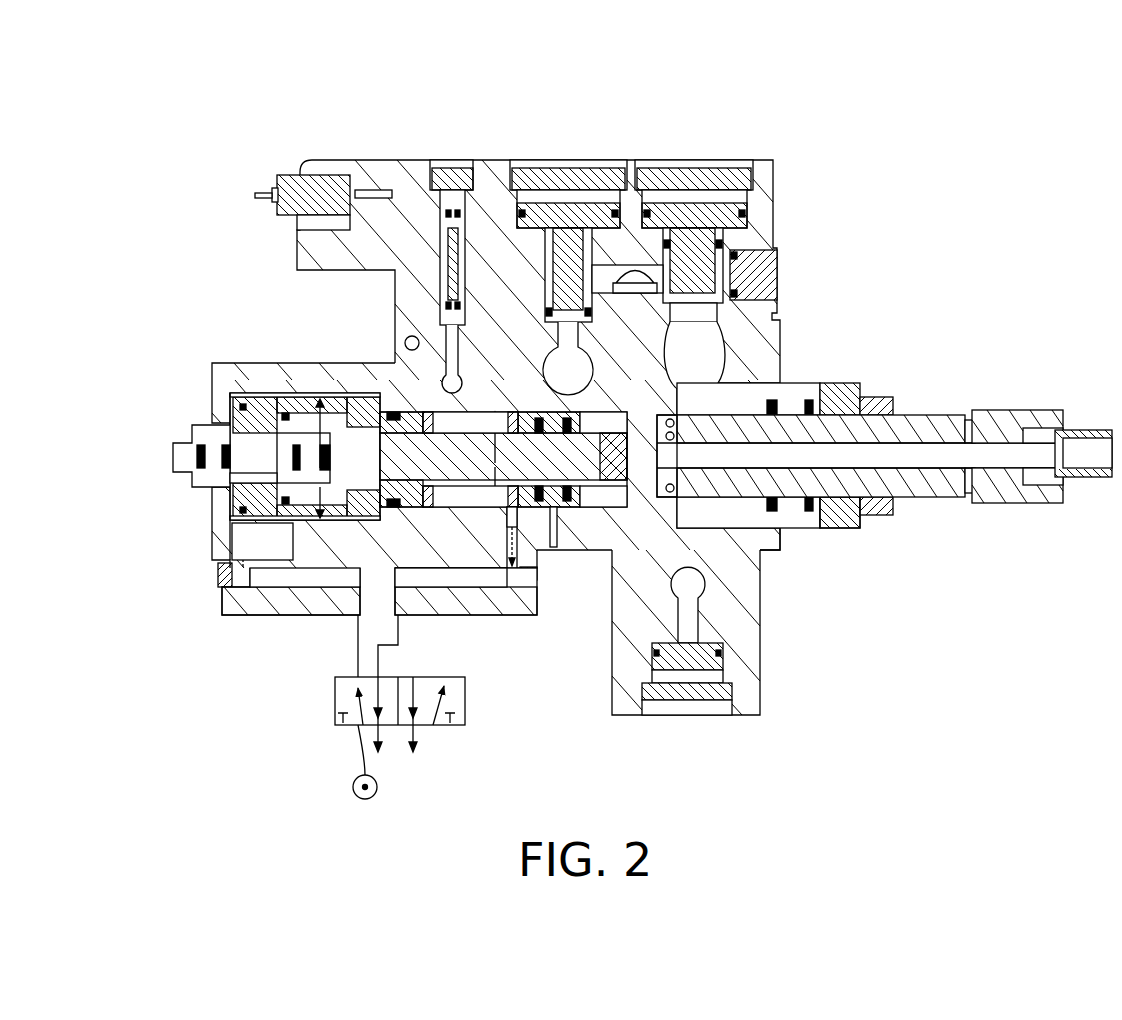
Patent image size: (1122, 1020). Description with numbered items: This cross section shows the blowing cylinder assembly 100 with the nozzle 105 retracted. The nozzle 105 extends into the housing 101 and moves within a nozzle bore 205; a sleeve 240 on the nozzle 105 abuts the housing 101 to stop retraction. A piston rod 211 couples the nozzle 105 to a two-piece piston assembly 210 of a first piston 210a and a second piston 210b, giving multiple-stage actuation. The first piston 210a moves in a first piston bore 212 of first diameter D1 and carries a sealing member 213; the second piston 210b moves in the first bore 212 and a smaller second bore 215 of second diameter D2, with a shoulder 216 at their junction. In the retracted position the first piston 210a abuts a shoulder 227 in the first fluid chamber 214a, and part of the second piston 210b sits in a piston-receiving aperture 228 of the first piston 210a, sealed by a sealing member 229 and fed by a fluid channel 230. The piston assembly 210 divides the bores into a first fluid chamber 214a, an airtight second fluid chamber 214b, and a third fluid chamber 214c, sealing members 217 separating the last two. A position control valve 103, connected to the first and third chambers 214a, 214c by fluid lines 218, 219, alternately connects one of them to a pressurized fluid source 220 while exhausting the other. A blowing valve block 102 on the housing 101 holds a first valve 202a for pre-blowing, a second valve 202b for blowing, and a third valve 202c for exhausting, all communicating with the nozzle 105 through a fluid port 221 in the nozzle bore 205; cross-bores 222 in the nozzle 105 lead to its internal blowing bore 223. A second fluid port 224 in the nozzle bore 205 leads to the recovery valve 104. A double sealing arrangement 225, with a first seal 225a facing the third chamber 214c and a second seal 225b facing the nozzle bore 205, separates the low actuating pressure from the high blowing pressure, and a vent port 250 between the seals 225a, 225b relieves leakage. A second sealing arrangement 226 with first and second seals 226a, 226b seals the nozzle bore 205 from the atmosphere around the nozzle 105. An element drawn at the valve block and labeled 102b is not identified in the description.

The blowing cylinder assembly 100 is at (912, 94).
The housing 101 is at (790, 332).
The blowing valve block 102 is at (778, 208).
The solenoid 102b is at (300, 192).
The position control valve 103 is at (320, 736).
The recovery valve 104 is at (750, 667).
The nozzle 105 is at (917, 522).
The first valve 202a is at (455, 180).
The second valve 202b is at (587, 180).
The third valve 202c is at (715, 180).
The nozzle bore 205 is at (801, 532).
The piston assembly 210 is at (342, 376).
The first piston 210a is at (232, 413).
The second piston 210b is at (303, 395).
The piston rod 211 is at (602, 470).
The first piston bore 212 is at (337, 513).
The sealing member 213 is at (243, 395).
The first fluid chamber 214a is at (230, 475).
The second fluid chamber 214b is at (360, 513).
The third fluid chamber 214c is at (457, 497).
The second bore 215 is at (480, 497).
The shoulder 216 is at (377, 397).
The sealing member 217 is at (393, 507).
The fluid line 218 is at (232, 540).
The fluid line 219 is at (430, 583).
The pressurized fluid source 220 is at (380, 790).
The fluid port 221 is at (771, 395).
The cross-bore 222 is at (884, 456).
The internal blowing bore 223 is at (918, 450).
The second fluid port 224 is at (673, 493).
The sealing arrangement 225 is at (588, 392).
The first seal 225a is at (508, 405).
The second seal 225b is at (590, 418).
The second sealing arrangement 226 is at (830, 532).
The first seal 226a is at (827, 393).
The second seal 226b is at (845, 527).
The shoulder 227 is at (247, 507).
The piston-receiving aperture 228 is at (263, 517).
The sealing member 229 is at (233, 397).
The fluid channel 230 is at (253, 457).
The sleeve 240 is at (875, 393).
The vent port 250 is at (554, 547).
The first diameter D1 is at (294, 482).
The second diameter D2 is at (434, 401).